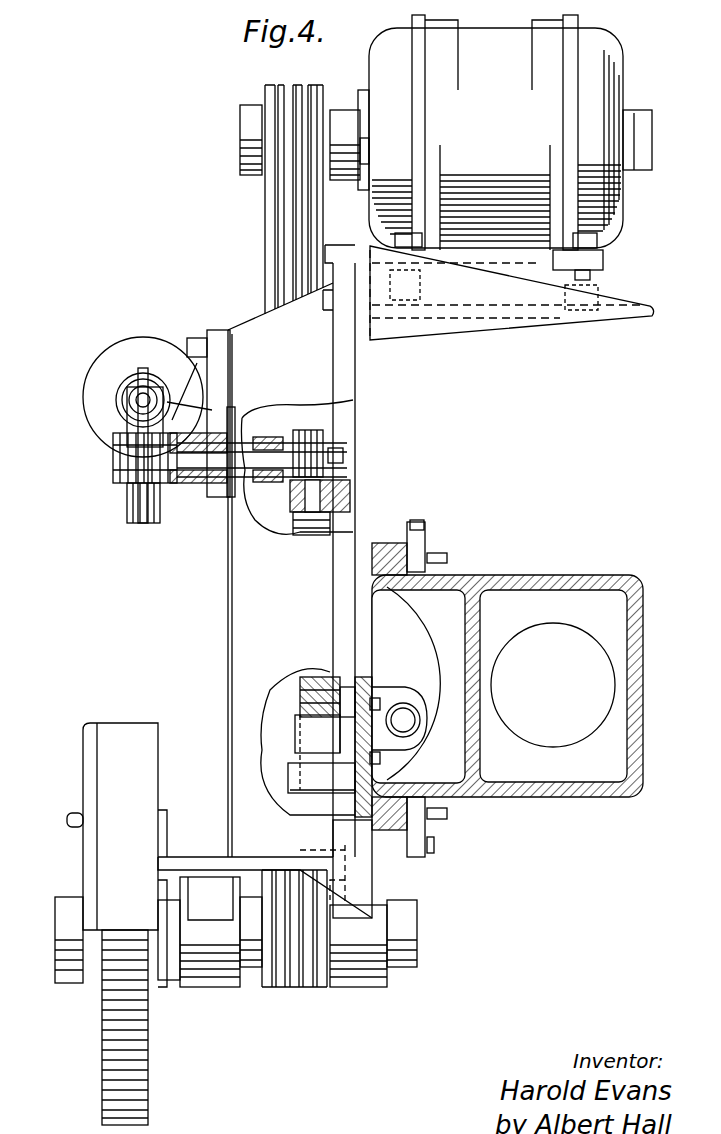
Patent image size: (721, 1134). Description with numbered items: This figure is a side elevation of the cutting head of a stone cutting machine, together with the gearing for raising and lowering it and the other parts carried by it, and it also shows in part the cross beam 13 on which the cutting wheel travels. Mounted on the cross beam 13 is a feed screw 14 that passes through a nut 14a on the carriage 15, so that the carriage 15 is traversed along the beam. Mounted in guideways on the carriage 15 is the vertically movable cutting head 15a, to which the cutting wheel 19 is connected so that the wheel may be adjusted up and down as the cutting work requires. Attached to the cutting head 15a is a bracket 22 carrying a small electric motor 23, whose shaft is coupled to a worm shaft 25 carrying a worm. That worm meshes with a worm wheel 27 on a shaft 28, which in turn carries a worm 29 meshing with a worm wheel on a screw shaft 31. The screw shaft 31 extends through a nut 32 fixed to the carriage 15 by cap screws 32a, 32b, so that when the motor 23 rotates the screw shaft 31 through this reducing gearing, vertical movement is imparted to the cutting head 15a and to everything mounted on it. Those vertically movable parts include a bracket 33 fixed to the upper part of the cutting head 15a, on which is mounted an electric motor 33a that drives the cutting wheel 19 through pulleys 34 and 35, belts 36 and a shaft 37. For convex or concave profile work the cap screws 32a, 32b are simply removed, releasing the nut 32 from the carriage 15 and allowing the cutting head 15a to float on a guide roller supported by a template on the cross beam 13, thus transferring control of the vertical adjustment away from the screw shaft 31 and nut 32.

The cross beam 13 is at (513, 578).
The feed screw 14 is at (405, 722).
The nut 14a is at (420, 705).
The carriage 15 is at (340, 582).
The cutting head 15a is at (228, 572).
The cutting wheel 19 is at (150, 1050).
The bracket 22 is at (215, 392).
The electric motor 23 is at (112, 356).
The worm shaft 25 is at (136, 400).
The worm wheel 27 is at (140, 470).
The shaft 28 is at (205, 478).
The worm 29 is at (325, 452).
The screw shaft 31 is at (332, 492).
The nut 32 is at (310, 732).
The cap screw 32a is at (380, 702).
The cap screw 32b is at (380, 757).
The bracket 33 is at (608, 318).
The electric motor 33a is at (623, 60).
The pulley 34 is at (258, 92).
The pulley 35 is at (262, 980).
The belts 36 is at (315, 252).
The shaft 37 is at (164, 970).